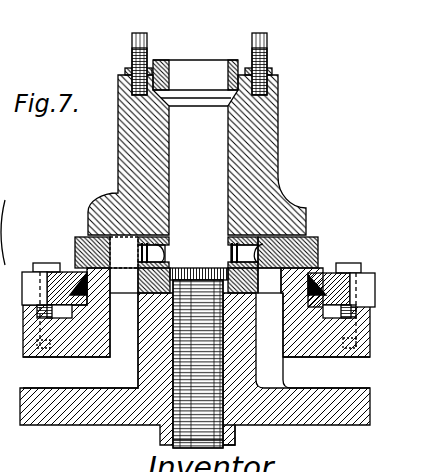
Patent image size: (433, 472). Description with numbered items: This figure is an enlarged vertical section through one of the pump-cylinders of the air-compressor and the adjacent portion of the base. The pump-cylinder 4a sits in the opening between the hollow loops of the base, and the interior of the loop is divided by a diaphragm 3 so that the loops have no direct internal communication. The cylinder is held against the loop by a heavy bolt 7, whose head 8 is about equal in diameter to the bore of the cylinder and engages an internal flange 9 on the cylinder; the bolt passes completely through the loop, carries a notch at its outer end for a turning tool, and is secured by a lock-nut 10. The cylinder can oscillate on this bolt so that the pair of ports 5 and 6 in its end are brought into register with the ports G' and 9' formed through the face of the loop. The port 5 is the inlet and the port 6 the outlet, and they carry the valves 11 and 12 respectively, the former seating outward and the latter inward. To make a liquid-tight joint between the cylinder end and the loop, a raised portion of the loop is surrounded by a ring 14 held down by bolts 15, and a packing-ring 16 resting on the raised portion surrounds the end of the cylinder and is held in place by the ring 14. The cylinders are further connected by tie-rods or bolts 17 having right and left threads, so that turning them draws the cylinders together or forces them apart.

The tie-rod 17 is at (130, 48).
The pump-cylinder 4a is at (278, 156).
The valve 11 is at (178, 250).
The valve 12 is at (262, 248).
The port 5 is at (124, 265).
The port 6 is at (269, 281).
The ring 14 is at (329, 274).
The bolt 15 is at (46, 262).
The packing-ring 16 is at (80, 274).
The diaphragm 3 is at (240, 357).
The port G' is at (80, 340).
The port 9' is at (314, 340).
The head 8 is at (184, 265).
The internal flange 9 is at (199, 264).
The bolt 7 is at (188, 390).
The lock-nut 10 is at (234, 437).